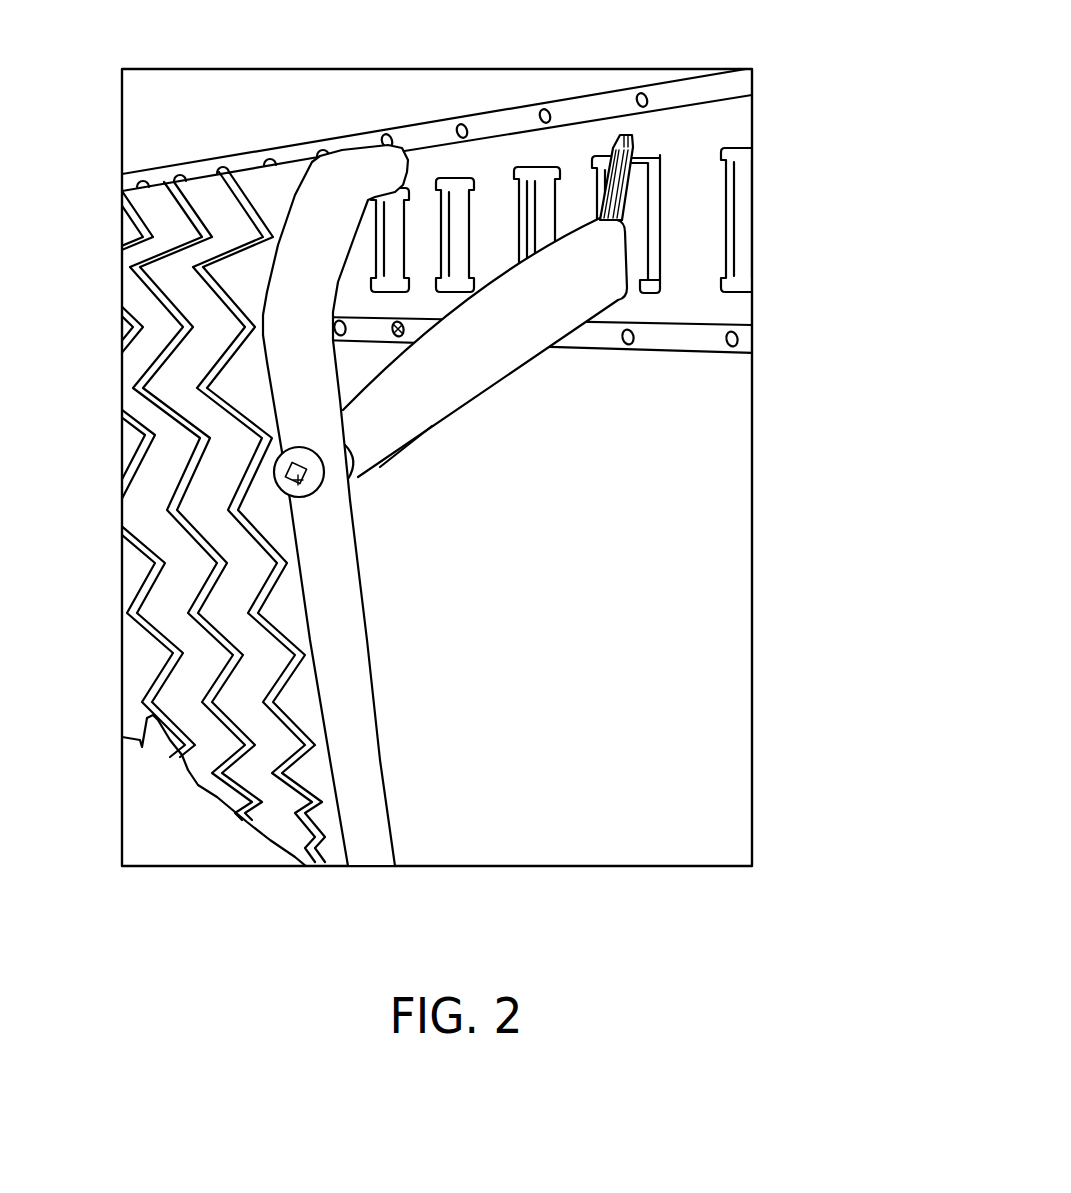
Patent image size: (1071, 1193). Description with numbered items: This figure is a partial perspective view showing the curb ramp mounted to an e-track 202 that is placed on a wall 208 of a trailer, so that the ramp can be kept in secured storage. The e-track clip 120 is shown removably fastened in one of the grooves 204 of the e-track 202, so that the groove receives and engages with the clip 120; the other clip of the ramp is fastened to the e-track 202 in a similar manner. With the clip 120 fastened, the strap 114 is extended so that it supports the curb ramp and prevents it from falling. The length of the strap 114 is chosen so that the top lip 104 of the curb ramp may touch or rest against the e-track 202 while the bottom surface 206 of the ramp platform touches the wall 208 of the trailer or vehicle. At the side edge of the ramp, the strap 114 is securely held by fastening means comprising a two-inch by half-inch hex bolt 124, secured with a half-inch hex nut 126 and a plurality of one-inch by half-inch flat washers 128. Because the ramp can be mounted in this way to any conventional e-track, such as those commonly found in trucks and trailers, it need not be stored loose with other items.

The top lip 104 is at (312, 160).
The strap 114 is at (477, 338).
The e-track clip 120 is at (633, 170).
The hex bolt 124 is at (303, 480).
The hex nut 126 is at (348, 457).
The flat washers 128 is at (280, 448).
The e-track 202 is at (680, 300).
The grooves 204 is at (660, 195).
The bottom surface 206 is at (370, 640).
The wall 208 is at (663, 495).